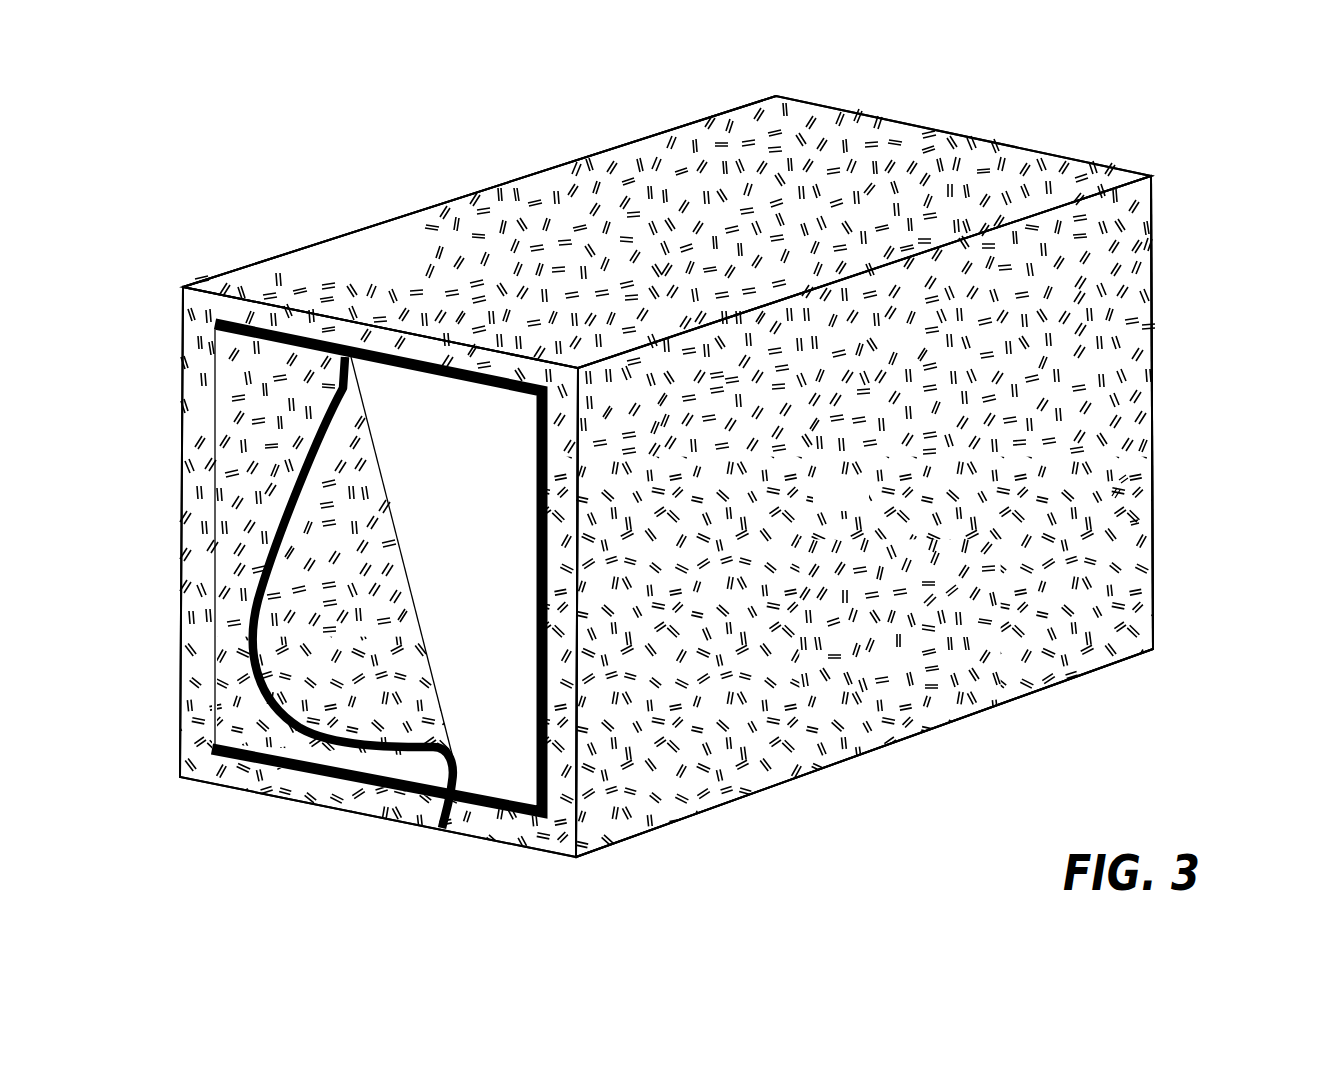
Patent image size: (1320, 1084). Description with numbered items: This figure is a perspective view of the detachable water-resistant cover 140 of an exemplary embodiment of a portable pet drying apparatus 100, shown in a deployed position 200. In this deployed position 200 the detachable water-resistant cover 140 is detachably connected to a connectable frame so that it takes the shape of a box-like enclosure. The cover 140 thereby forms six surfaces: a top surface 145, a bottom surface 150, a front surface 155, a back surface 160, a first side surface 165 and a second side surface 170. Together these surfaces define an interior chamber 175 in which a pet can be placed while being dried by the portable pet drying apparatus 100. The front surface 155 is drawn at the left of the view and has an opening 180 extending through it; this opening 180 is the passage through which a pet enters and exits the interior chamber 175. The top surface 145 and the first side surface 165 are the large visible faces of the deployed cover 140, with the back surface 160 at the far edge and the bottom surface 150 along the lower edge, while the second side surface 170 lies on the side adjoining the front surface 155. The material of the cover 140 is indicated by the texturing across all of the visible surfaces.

The portable pet drying apparatus 100 is at (1312, 110).
The detachable water-resistant cover 140 is at (820, 507).
The top surface 145 is at (558, 168).
The bottom surface 150 is at (853, 762).
The front surface 155 is at (190, 468).
The back surface 160 is at (1150, 248).
The first side surface 165 is at (1133, 352).
The second side surface 170 is at (268, 253).
The interior chamber 175 is at (492, 768).
The opening 180 is at (364, 678).
The deployed position 200 is at (1138, 506).